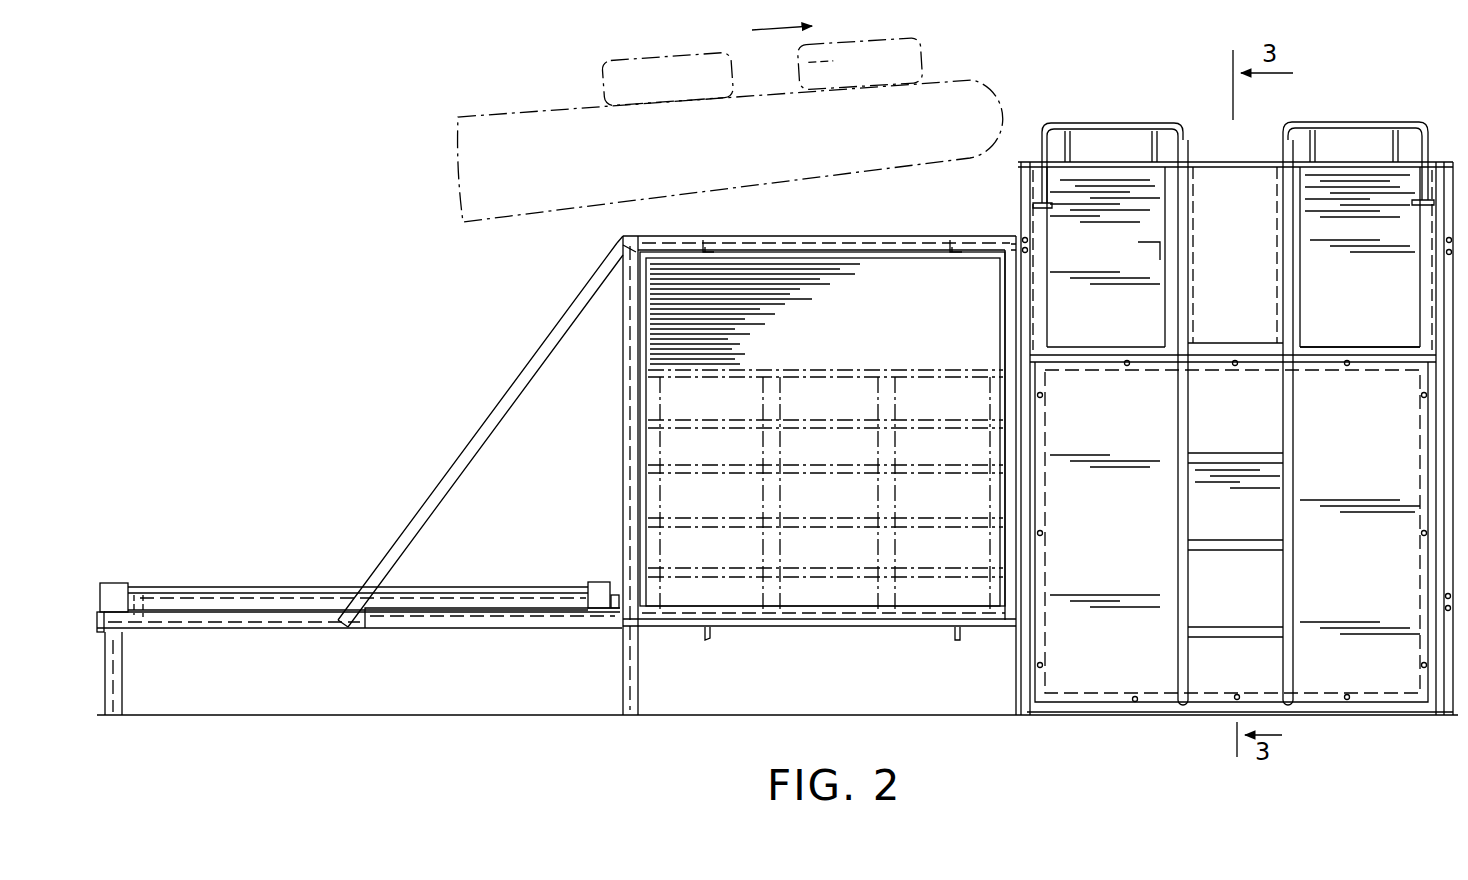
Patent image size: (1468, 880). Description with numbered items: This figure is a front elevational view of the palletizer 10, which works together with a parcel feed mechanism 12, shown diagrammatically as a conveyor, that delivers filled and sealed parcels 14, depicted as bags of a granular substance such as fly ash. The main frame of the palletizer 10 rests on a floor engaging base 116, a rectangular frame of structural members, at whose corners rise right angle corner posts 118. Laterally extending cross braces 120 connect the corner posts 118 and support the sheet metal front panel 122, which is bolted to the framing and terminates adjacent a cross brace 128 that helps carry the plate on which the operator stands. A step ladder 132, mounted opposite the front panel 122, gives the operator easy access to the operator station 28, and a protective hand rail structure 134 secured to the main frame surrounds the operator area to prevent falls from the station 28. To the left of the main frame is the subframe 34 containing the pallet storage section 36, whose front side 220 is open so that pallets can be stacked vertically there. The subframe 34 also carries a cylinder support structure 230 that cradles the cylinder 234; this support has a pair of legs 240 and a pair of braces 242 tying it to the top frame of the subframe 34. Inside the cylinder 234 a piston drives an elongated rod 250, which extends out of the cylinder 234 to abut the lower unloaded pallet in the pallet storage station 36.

The palletizer 10 is at (410, 472).
The parcel feed mechanism 12 is at (508, 216).
The parcels 14 is at (800, 62).
The operator station 28 is at (1262, 298).
The subframe 34 is at (507, 387).
The pallet storage section 36 is at (912, 312).
The floor engaging base 116 is at (1092, 716).
The corner posts 118 is at (1020, 208).
The cross braces 120 is at (1320, 365).
The front panel 122 is at (1140, 578).
The cross brace 128 is at (1366, 345).
The step ladder 132 is at (1295, 586).
The protective hand rail structure 134 is at (1388, 108).
The front side 220 is at (643, 326).
The cylinder support structure 230 is at (327, 636).
The cylinder 234 is at (226, 590).
The legs 240 is at (122, 689).
The braces 242 is at (450, 481).
The elongated rod 250 is at (612, 582).